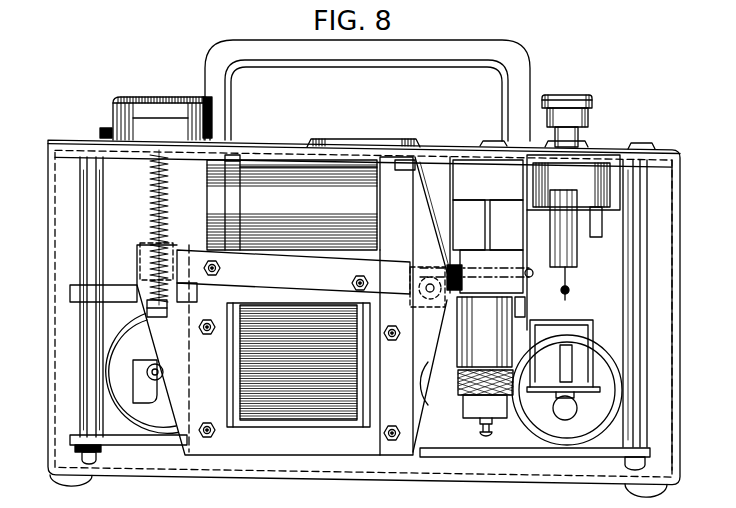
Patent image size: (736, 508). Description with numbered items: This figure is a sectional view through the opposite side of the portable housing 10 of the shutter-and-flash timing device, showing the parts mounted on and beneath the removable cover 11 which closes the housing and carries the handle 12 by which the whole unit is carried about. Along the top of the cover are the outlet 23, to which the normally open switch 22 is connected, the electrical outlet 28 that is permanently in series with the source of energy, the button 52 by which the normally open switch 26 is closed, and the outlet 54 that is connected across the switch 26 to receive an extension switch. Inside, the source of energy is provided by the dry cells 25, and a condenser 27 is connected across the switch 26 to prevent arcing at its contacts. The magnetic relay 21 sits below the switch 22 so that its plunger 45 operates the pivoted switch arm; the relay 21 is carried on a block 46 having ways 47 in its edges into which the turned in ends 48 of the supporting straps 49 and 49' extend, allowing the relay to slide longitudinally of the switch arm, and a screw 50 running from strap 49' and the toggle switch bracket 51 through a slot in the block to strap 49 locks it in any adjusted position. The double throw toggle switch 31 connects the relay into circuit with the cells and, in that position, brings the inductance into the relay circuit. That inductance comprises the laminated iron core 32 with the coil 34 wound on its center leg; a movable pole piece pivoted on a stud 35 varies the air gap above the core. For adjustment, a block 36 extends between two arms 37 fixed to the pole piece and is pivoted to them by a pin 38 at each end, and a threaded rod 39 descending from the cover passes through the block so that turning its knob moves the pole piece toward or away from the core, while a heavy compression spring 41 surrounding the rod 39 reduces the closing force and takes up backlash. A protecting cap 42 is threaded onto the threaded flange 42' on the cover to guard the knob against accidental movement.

The portable housing 10 is at (672, 333).
The removable cover 11 is at (678, 183).
The handle 12 is at (471, 56).
The magnetic relay 21 is at (467, 422).
The normally open switch 22 is at (485, 226).
The outlet 23 is at (343, 140).
The dry cells 25 is at (115, 362).
The normally open switch 26 is at (577, 243).
The condenser 27 is at (263, 165).
The electrical outlet 28 is at (100, 135).
The double throw toggle switch 31 is at (567, 415).
The laminated iron core 32 is at (335, 447).
The coil 34 is at (290, 410).
The stud 35 is at (427, 283).
The block 36 is at (150, 249).
The arms 37 is at (240, 276).
The pin 38 is at (142, 272).
The threaded rod 39 is at (150, 214).
The compression spring 41 is at (150, 182).
The protecting cap 42 is at (161, 99).
The threaded flange 42' is at (91, 112).
The plunger 45 is at (487, 238).
The block 46 is at (432, 340).
The ways 47 is at (434, 248).
The turned in ends 48 is at (448, 232).
The supporting strap 49 is at (467, 141).
The supporting strap 49' is at (509, 225).
The screw 50 is at (533, 275).
The toggle switch bracket 51 is at (524, 314).
The button 52 is at (566, 100).
The outlet 54 is at (630, 146).